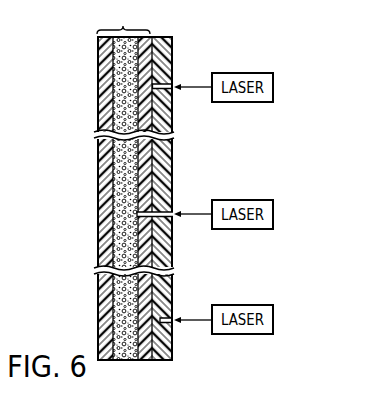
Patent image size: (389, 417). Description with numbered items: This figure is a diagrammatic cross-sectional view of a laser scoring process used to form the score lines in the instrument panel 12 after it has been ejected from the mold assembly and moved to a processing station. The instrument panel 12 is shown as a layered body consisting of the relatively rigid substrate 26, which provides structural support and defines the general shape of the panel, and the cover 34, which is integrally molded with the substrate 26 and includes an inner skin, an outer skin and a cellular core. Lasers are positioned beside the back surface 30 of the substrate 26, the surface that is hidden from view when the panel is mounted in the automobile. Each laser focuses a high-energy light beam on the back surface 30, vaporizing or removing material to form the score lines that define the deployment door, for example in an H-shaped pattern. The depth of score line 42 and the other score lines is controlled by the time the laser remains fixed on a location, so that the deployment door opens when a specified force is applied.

The instrument panel 12 is at (178, 27).
The cover 34 is at (124, 24).
The substrate 26 is at (167, 181).
The back surface 30 is at (172, 155).
The score line 42 is at (174, 216).